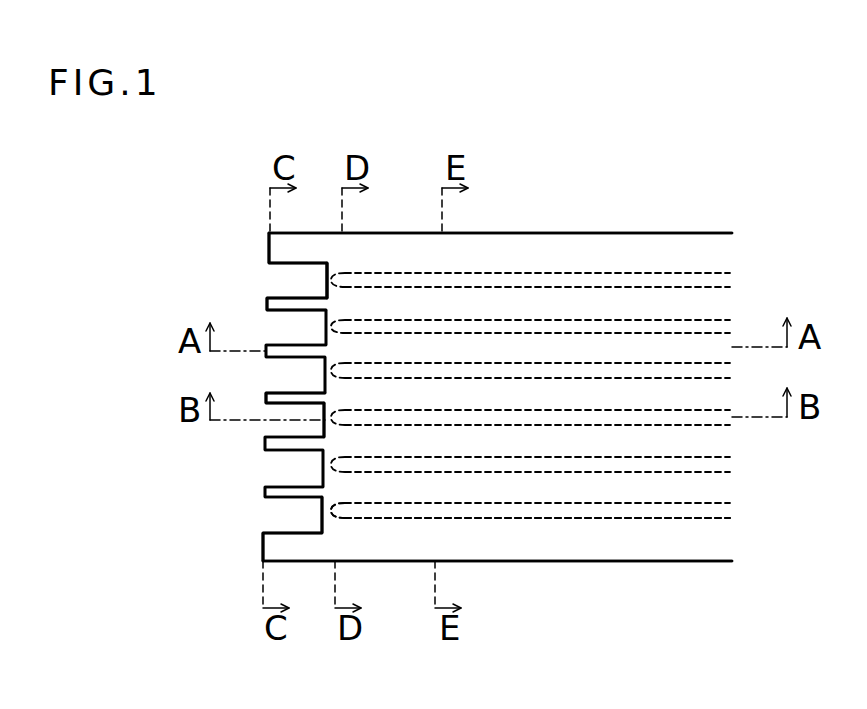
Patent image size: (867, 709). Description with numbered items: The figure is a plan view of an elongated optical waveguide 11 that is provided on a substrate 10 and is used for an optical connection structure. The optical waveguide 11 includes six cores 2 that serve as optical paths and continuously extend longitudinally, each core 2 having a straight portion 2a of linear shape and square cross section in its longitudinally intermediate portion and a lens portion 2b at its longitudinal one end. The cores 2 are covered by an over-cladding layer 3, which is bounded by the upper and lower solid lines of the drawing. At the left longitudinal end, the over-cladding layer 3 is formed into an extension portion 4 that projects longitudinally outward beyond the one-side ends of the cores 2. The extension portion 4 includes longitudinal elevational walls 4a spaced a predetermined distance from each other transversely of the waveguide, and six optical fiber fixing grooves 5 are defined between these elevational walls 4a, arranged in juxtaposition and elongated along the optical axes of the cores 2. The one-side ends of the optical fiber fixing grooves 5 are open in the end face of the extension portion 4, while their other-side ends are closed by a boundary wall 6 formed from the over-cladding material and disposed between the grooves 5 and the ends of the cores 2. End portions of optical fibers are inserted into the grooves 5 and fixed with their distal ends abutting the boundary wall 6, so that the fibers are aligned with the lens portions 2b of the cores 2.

The cores 2 is at (625, 332).
The straight portion 2a is at (513, 516).
The lens portion 2b is at (337, 512).
The over-cladding layer 3 is at (673, 233).
The extension portion 4 is at (337, 225).
The longitudinal elevational walls 4a is at (280, 303).
The optical fiber fixing grooves 5 is at (292, 282).
The boundary wall 6 is at (328, 282).
The substrate 10 is at (258, 466).
The optical waveguide 11 is at (582, 583).